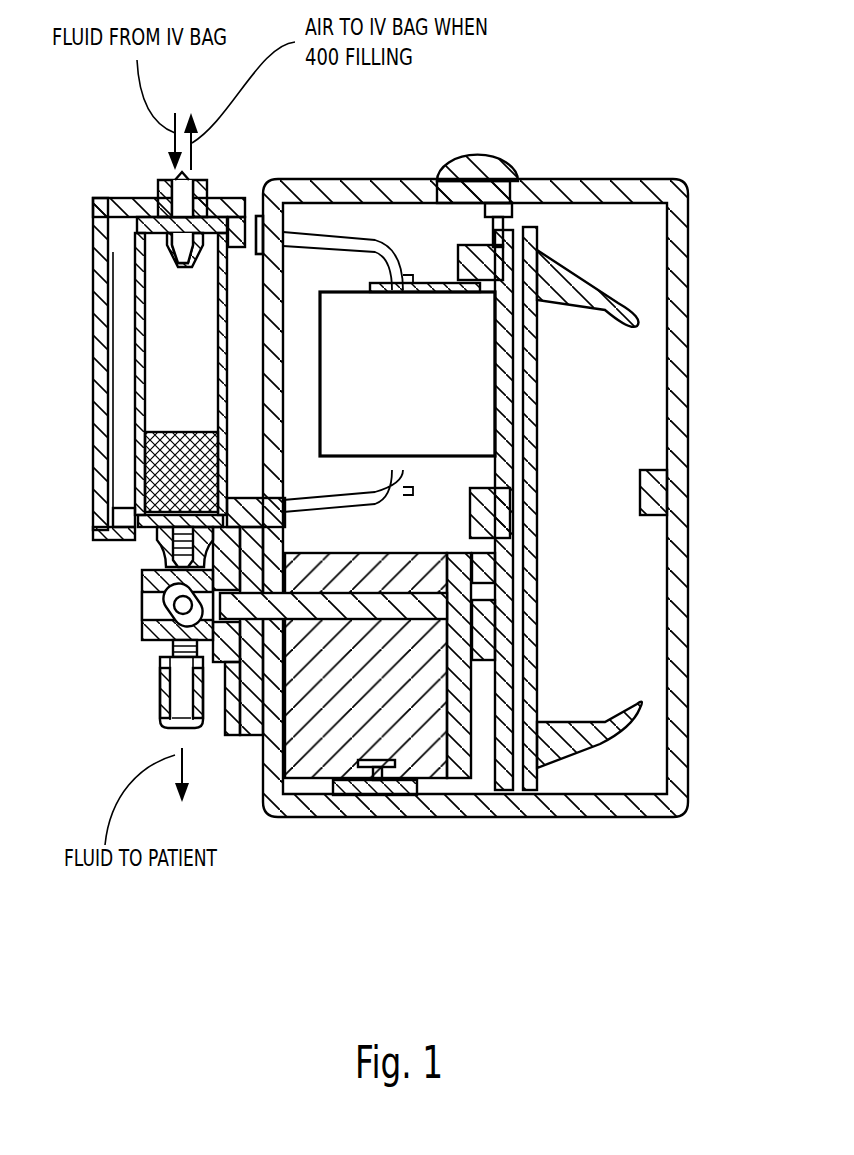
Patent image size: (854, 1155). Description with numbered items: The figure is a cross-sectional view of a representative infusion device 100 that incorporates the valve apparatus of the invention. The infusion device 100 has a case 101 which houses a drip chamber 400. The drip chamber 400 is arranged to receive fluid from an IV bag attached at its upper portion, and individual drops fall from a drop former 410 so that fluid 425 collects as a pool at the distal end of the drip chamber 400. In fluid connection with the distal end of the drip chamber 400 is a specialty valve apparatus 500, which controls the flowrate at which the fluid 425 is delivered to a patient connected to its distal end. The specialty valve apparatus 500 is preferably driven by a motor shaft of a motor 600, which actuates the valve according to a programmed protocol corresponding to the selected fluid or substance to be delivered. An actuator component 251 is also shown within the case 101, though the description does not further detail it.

The infusion device 100 is at (568, 944).
The case 101 is at (567, 180).
The actuator assembly 251 is at (462, 441).
The drip chamber 400 is at (132, 465).
The drop former 410 is at (185, 268).
The fluid 425 is at (180, 432).
The specialty valve apparatus 500 is at (116, 609).
The motor 600 is at (423, 737).